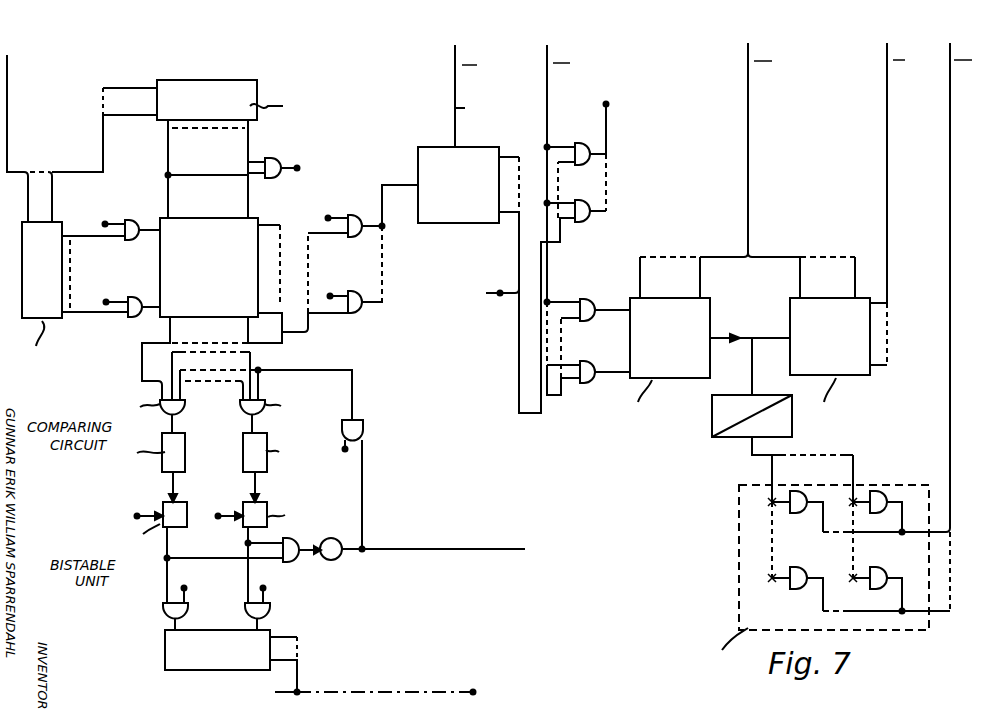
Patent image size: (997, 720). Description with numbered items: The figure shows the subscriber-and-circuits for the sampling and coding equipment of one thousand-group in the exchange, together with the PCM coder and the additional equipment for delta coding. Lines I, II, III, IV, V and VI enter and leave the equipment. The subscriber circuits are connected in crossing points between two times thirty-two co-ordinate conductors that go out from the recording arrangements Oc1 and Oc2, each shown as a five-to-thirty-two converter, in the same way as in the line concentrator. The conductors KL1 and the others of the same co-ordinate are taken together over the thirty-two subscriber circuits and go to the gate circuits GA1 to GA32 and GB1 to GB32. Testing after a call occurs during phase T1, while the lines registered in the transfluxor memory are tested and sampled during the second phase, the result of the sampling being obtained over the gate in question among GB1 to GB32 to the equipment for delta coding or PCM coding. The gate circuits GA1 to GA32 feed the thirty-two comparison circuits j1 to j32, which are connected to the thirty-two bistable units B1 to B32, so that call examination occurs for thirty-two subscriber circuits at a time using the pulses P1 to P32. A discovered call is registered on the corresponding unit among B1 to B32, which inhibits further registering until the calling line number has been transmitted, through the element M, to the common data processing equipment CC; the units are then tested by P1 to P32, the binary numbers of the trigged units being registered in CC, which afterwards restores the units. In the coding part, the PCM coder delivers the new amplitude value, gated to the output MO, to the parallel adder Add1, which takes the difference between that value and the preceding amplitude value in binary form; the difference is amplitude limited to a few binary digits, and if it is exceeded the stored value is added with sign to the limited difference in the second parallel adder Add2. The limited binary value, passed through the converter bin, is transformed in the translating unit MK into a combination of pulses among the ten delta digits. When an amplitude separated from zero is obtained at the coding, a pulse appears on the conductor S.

The conductor I is at (82, 136).
The conductor II is at (467, 96).
The conductor III is at (563, 220).
The conductor IV is at (747, 170).
The conductor V is at (887, 204).
The conductor VI is at (937, 327).
The recording arrangement Oc1 is at (75, 296).
The recording arrangement Oc2 is at (246, 149).
The phase T1 is at (275, 163).
The pulse P1 is at (128, 223).
The pulse P32 is at (128, 300).
The conductor KL1 is at (246, 319).
The gate circuit GA1 is at (146, 414).
The gate circuit GA32 is at (283, 414).
The gate circuit GB1 is at (363, 248).
The gate circuit GB32 is at (351, 307).
The comparison circuit j1 is at (148, 467).
The comparison circuit j32 is at (287, 467).
The bistable unit B1 is at (144, 550).
The bistable unit B32 is at (263, 550).
The data processing equipment CC is at (319, 641).
The element M is at (346, 491).
The output MO is at (595, 153).
The conductor S is at (496, 280).
The parallel adder Add1 is at (685, 382).
The parallel adder Add2 is at (850, 362).
The binary to 1/16 converter bin is at (782, 407).
The translating unit MK is at (817, 565).